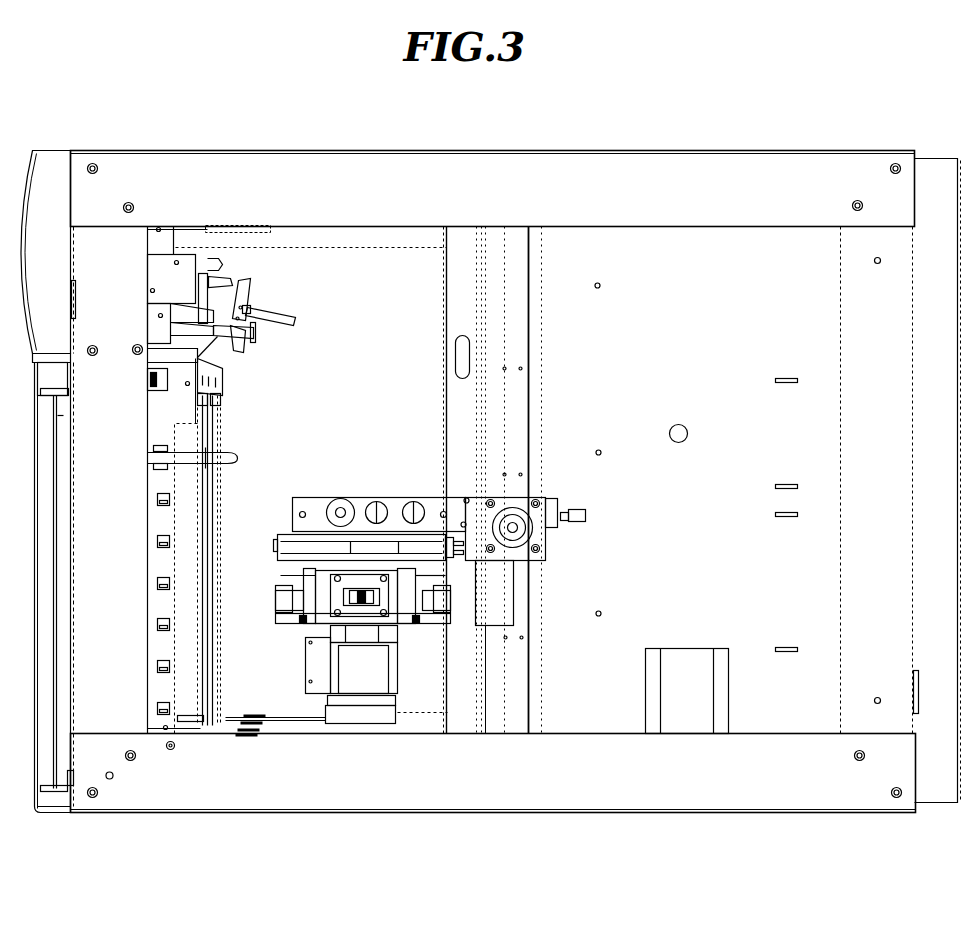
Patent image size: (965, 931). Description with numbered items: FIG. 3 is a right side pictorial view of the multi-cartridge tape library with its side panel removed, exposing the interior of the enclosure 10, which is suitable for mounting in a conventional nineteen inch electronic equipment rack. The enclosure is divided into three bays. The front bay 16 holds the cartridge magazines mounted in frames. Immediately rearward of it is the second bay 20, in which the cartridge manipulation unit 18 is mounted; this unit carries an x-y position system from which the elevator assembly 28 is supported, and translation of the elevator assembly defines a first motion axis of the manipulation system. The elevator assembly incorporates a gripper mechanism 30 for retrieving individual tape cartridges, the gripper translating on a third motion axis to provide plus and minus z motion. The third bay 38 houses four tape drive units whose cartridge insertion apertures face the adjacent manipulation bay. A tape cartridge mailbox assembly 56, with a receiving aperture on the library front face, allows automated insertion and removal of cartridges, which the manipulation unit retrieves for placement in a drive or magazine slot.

The enclosure 10 is at (514, 150).
The front bay 16 is at (197, 833).
The cartridge manipulation unit 18 is at (273, 578).
The second bay 20 is at (472, 833).
The elevator assembly 28 is at (273, 546).
The gripper mechanism 30 is at (289, 627).
The third bay 38 is at (915, 833).
The tape cartridge mailbox assembly 56 is at (207, 257).